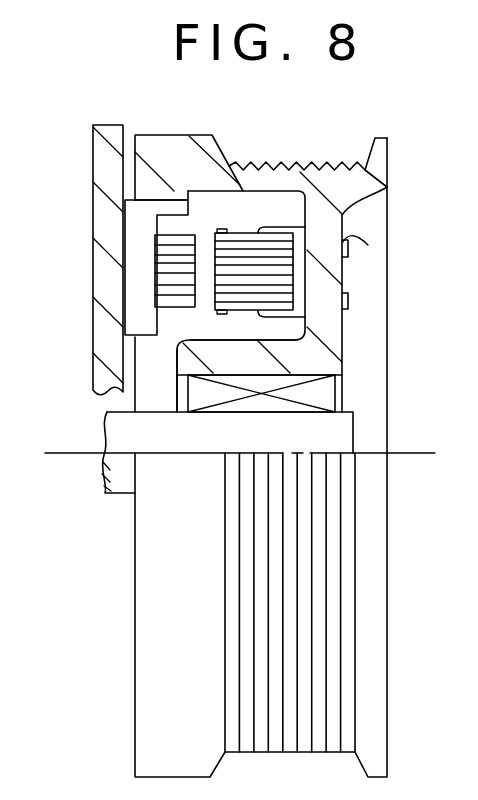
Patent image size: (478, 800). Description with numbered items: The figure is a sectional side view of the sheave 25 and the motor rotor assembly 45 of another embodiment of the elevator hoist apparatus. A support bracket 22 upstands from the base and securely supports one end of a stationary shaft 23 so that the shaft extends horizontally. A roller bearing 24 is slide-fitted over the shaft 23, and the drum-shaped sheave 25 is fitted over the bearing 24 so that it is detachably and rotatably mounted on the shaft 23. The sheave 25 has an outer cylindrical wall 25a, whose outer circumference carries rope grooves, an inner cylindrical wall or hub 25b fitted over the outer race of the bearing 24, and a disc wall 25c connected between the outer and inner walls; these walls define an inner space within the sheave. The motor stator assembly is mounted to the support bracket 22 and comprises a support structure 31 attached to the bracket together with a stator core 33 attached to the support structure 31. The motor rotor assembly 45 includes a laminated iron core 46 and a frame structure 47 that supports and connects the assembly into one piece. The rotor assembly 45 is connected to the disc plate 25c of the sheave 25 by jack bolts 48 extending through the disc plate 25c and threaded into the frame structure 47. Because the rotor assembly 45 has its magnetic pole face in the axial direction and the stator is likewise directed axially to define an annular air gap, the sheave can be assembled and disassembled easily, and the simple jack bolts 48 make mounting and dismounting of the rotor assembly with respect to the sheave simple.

The support bracket 22 is at (107, 164).
The stationary shaft 23 is at (348, 432).
The roller bearing 24 is at (340, 387).
The sheave 25 is at (380, 155).
The outer cylindrical wall 25a is at (284, 180).
The hub 25b is at (190, 362).
The disc wall 25c is at (333, 330).
The support structure 31 is at (173, 212).
The stator core 33 is at (186, 236).
The motor rotor assembly 45 is at (215, 260).
The laminated iron core 46 is at (215, 268).
The frame structure 47 is at (340, 283).
The jack bolts 48 is at (412, 246).